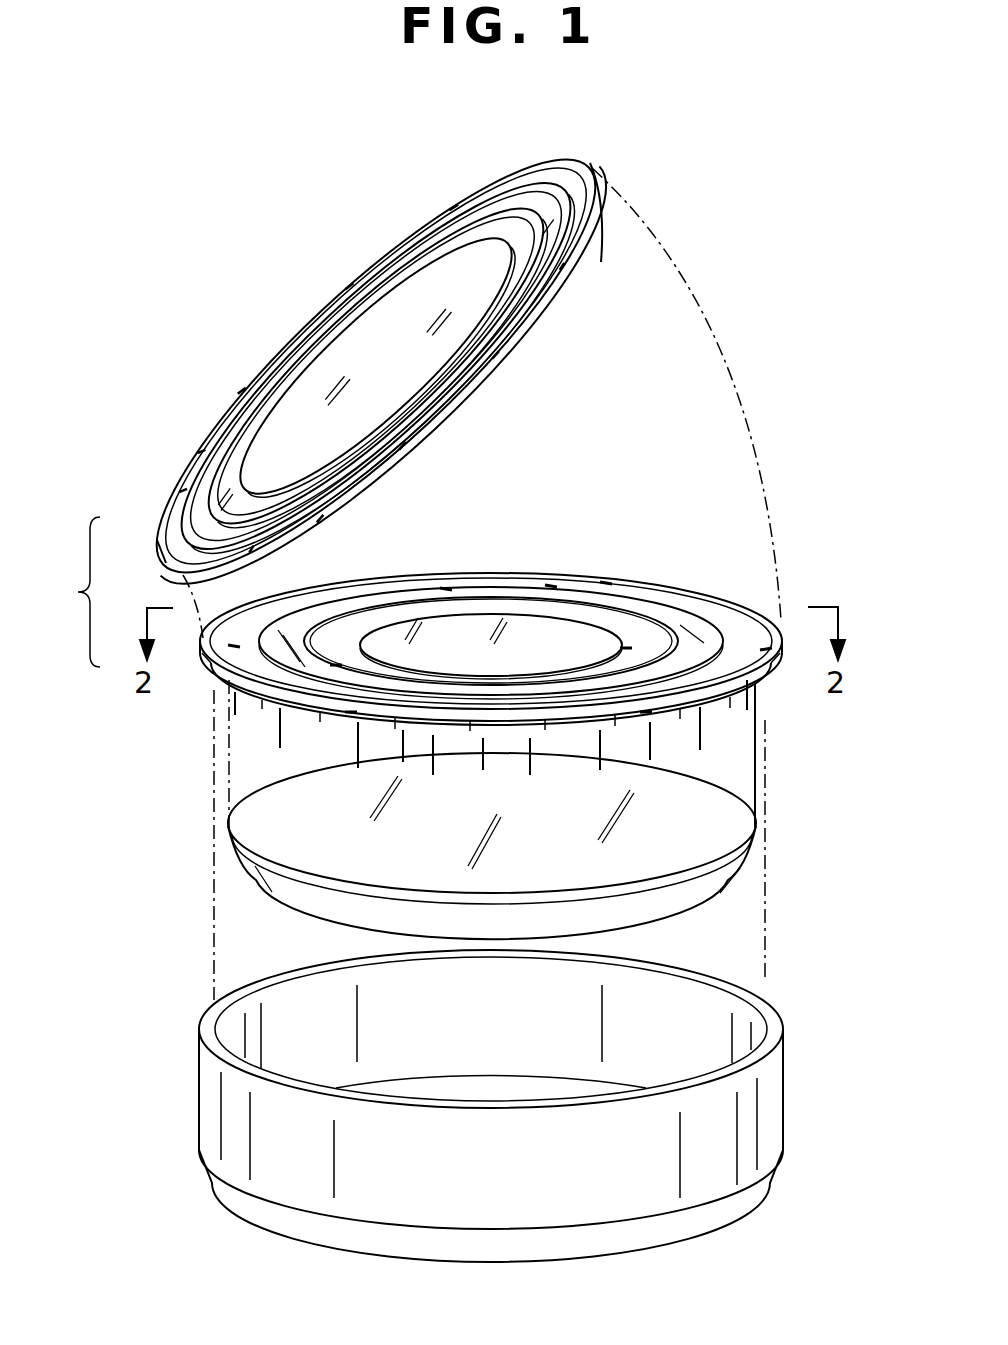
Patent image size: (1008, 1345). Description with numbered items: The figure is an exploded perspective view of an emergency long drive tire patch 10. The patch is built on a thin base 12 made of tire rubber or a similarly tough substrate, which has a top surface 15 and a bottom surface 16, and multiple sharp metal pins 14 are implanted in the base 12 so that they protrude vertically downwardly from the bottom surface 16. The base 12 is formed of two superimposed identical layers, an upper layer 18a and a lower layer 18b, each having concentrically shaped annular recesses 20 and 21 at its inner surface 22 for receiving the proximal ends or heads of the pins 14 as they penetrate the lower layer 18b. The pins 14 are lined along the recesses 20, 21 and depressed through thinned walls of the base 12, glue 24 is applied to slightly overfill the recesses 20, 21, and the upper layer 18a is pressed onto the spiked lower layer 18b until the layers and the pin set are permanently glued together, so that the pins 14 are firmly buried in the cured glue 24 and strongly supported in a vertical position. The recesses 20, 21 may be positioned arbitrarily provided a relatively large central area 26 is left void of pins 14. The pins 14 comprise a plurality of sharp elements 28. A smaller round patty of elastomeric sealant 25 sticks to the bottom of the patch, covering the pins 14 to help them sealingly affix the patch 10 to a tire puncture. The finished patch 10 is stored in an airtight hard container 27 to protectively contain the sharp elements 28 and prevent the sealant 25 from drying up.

The tire patch 10 is at (162, 300).
The base 12 is at (410, 417).
The pins 14 is at (282, 740).
The top surface 15 is at (283, 330).
The bottom surface 16 is at (727, 702).
The upper layer 18a is at (409, 372).
The lower layer 18b is at (532, 566).
The annular recess 20 is at (378, 368).
The annular recess 21 is at (377, 368).
The inner surface 22 is at (562, 598).
The glue 24 is at (713, 602).
The elastomeric sealant 25 is at (627, 910).
The central area 26 is at (480, 623).
The hard container 27 is at (785, 1087).
The sharp elements 28 is at (703, 740).